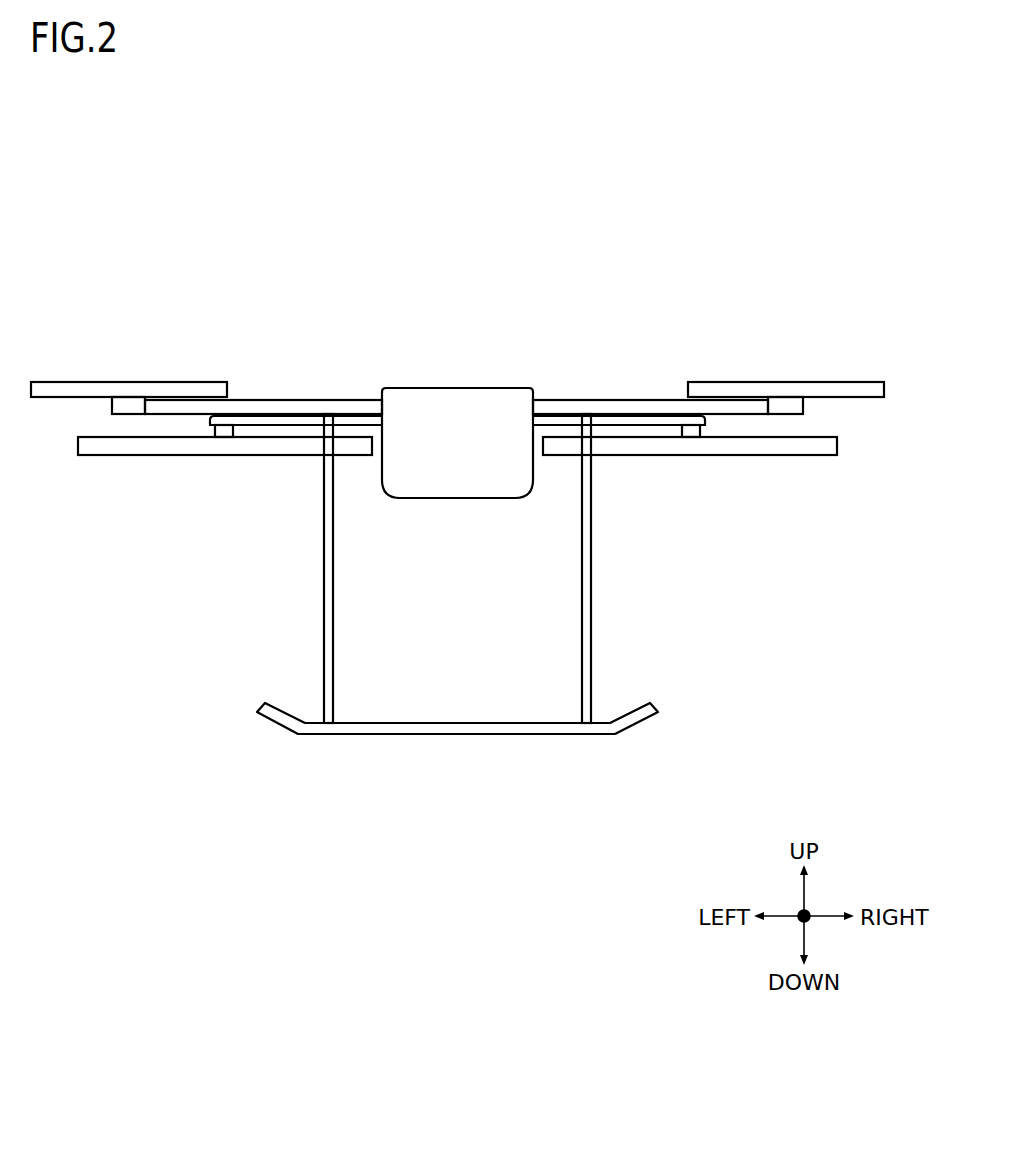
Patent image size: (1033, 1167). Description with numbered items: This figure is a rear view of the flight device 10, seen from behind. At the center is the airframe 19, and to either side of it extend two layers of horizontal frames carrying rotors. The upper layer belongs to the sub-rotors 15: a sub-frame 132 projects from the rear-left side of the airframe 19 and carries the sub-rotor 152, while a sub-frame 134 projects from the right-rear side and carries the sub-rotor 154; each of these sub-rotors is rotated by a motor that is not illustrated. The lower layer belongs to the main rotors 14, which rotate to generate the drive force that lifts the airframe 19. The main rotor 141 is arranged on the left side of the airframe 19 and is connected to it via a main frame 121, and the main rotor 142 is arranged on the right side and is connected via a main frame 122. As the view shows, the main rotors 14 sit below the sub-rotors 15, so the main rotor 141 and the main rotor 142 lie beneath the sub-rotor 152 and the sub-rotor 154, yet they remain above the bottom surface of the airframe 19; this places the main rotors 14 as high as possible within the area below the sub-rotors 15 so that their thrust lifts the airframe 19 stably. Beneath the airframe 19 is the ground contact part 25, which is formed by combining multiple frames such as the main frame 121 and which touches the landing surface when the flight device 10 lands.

The flight device 10 is at (445, 253).
The main rotors 14 is at (498, 480).
The sub-rotors 15 is at (488, 355).
The airframe 19 is at (456, 388).
The ground contact part 25 is at (457, 734).
The main frame 121 is at (280, 427).
The main frame 122 is at (638, 427).
The sub-frame 132 is at (305, 400).
The sub-frame 134 is at (612, 400).
The main rotor 141 is at (148, 455).
The main rotor 142 is at (770, 455).
The sub-rotor 152 is at (72, 382).
The sub-rotor 154 is at (836, 382).